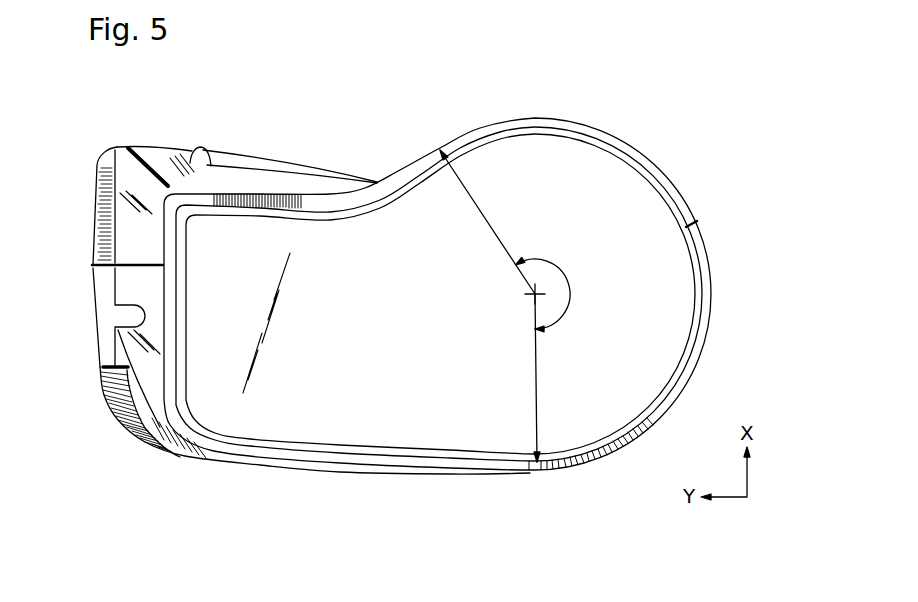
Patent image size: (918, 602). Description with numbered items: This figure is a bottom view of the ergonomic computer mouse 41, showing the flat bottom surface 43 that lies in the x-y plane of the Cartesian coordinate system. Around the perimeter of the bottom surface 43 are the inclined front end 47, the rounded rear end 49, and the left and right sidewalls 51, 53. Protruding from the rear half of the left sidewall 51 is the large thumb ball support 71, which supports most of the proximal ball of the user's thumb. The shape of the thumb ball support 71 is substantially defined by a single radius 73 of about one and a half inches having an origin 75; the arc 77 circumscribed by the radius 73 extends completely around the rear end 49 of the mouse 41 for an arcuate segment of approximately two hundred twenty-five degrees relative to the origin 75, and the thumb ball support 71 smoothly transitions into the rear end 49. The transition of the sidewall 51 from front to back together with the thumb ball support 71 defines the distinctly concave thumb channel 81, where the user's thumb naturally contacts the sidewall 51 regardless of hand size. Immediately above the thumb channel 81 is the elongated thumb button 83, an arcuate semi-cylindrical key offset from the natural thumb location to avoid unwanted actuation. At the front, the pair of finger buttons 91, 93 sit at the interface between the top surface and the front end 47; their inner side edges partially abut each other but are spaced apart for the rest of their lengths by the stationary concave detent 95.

The ergonomic computer mouse 41 is at (185, 508).
The flat bottom surface 43 is at (467, 420).
The inclined front end 47 is at (150, 377).
The rounded rear end 49 is at (713, 245).
The left sidewall 51 is at (158, 157).
The right sidewall 53 is at (316, 466).
The thumb ball support 71 is at (590, 122).
The radius 73 is at (477, 208).
The origin 75 is at (527, 297).
The arc 77 is at (560, 294).
The thumb channel 81 is at (302, 188).
The thumb button 83 is at (247, 160).
The finger button 91 is at (98, 217).
The finger button 93 is at (141, 433).
The concave detent 95 is at (110, 315).